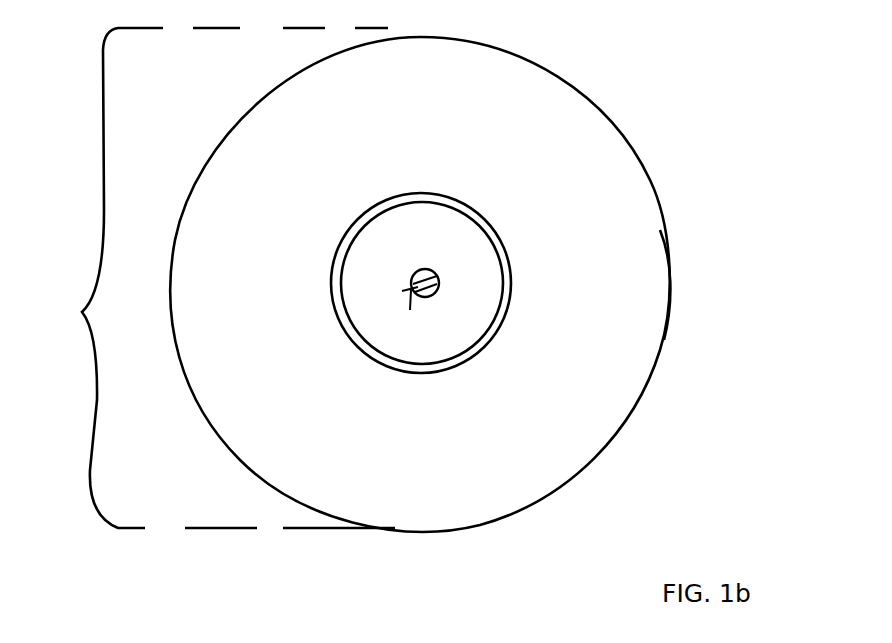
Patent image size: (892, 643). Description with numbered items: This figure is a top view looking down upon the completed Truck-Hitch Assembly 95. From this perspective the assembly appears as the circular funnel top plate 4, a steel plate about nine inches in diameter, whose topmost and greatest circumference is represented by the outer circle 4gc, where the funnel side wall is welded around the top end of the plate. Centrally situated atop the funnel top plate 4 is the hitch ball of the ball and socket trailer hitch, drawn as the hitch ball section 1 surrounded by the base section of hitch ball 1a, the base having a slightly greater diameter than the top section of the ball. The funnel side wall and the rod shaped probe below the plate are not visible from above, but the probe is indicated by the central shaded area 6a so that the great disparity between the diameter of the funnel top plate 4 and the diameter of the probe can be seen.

The Truck-Hitch Assembly 95 is at (216, 278).
The funnel top plate 4 is at (575, 359).
The outer circle 4gc is at (678, 299).
The base section of hitch ball 1a is at (330, 258).
The hitch ball section 1 is at (466, 267).
The central shaded area 6a is at (408, 291).